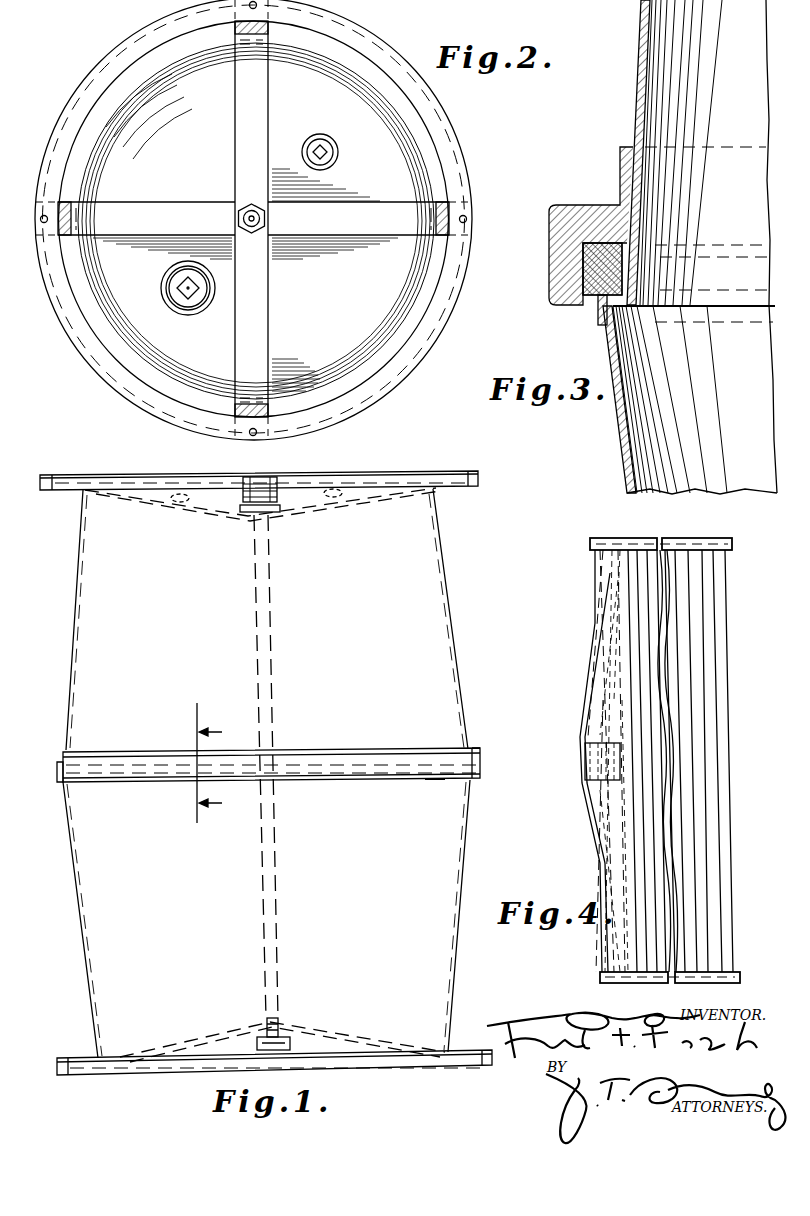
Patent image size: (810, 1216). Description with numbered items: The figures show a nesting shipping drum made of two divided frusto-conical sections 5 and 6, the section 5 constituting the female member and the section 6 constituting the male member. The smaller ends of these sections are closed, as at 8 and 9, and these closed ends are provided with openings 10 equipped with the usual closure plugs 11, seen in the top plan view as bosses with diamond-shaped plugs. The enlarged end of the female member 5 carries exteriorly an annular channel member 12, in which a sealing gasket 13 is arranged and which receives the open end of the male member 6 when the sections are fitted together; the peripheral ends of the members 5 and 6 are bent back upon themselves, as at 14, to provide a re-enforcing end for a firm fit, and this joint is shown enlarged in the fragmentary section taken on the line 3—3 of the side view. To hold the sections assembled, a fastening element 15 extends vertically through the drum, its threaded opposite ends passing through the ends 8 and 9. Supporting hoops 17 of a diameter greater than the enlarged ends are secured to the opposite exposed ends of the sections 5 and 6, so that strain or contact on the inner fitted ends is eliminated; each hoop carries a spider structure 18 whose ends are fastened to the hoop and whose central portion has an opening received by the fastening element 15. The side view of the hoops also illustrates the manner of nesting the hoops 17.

In FIG. 3, the section 5 is at (637, 82).
In FIG. 1, the section 5 is at (267, 619).
In FIG. 3, the section 6 is at (612, 440).
In FIG. 1, the section 6 is at (274, 927).
In FIG. 1, the closed end 8 is at (345, 1032).
In FIG. 2, the closed end 9 is at (256, 221).
In FIG. 1, the closed end 9 is at (315, 510).
In FIG. 2, the opening 10 is at (190, 315).
In FIG. 2, the closure plug 11 is at (177, 290).
In FIG. 1, the closure plug 11 is at (178, 508).
In FIG. 3, the annular channel member 12 is at (570, 208).
In FIG. 1, the annular channel member 12 is at (480, 762).
In FIG. 3, the sealing gasket 13 is at (583, 256).
In FIG. 3, the re-enforcing end 14 is at (600, 312).
In FIG. 1, the re-enforcing end 14 is at (435, 781).
In FIG. 1, the fastening element 15 is at (270, 665).
In FIG. 2, the supporting hoop 17 is at (398, 52).
In FIG. 1, the supporting hoop 17 is at (448, 472).
In FIG. 4, the supporting hoop 17 is at (602, 648).
In FIG. 2, the spider structure 18 is at (244, 154).
In FIG. 1, the spider structure 18 is at (213, 498).
In FIG. 4, the spider structure 18 is at (585, 689).
In FIG. 1, the section line 3— 3 is at (216, 763).